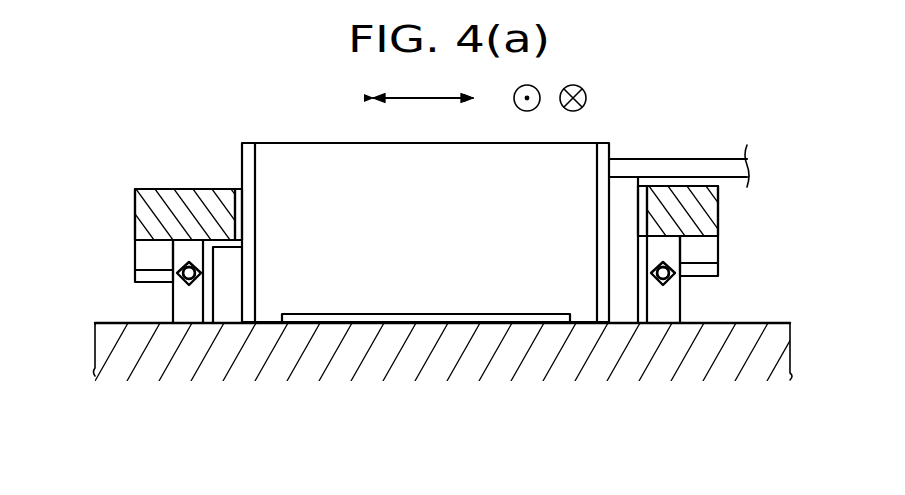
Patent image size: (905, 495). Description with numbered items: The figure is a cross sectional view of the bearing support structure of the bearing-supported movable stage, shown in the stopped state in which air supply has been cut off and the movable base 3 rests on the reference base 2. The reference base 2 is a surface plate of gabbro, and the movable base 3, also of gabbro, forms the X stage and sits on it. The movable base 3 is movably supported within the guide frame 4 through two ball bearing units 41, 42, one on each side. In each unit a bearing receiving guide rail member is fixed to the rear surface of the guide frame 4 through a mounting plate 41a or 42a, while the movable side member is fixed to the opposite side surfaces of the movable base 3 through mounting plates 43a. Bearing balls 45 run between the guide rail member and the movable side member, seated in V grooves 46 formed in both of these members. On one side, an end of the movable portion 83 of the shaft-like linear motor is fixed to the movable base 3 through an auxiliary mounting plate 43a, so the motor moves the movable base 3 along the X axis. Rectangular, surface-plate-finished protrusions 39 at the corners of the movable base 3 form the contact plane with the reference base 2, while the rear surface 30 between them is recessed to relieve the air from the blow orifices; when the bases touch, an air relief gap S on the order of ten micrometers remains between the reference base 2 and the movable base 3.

The reference base 2 is at (367, 338).
The movable base 3 is at (583, 152).
The guide frame 4 is at (222, 198).
The rear surface 30 is at (538, 320).
The protrusions 39 is at (272, 313).
The ball bearing unit 41 is at (733, 273).
The mounting plate 41a is at (720, 255).
The ball bearing unit 42 is at (101, 228).
The mounting plate 42a is at (135, 260).
The mounting plate 43a is at (228, 313).
The bearing balls 45 is at (189, 283).
The V grooves 46 is at (187, 267).
The movable portion 83 is at (702, 165).
The air relief gap S is at (508, 320).